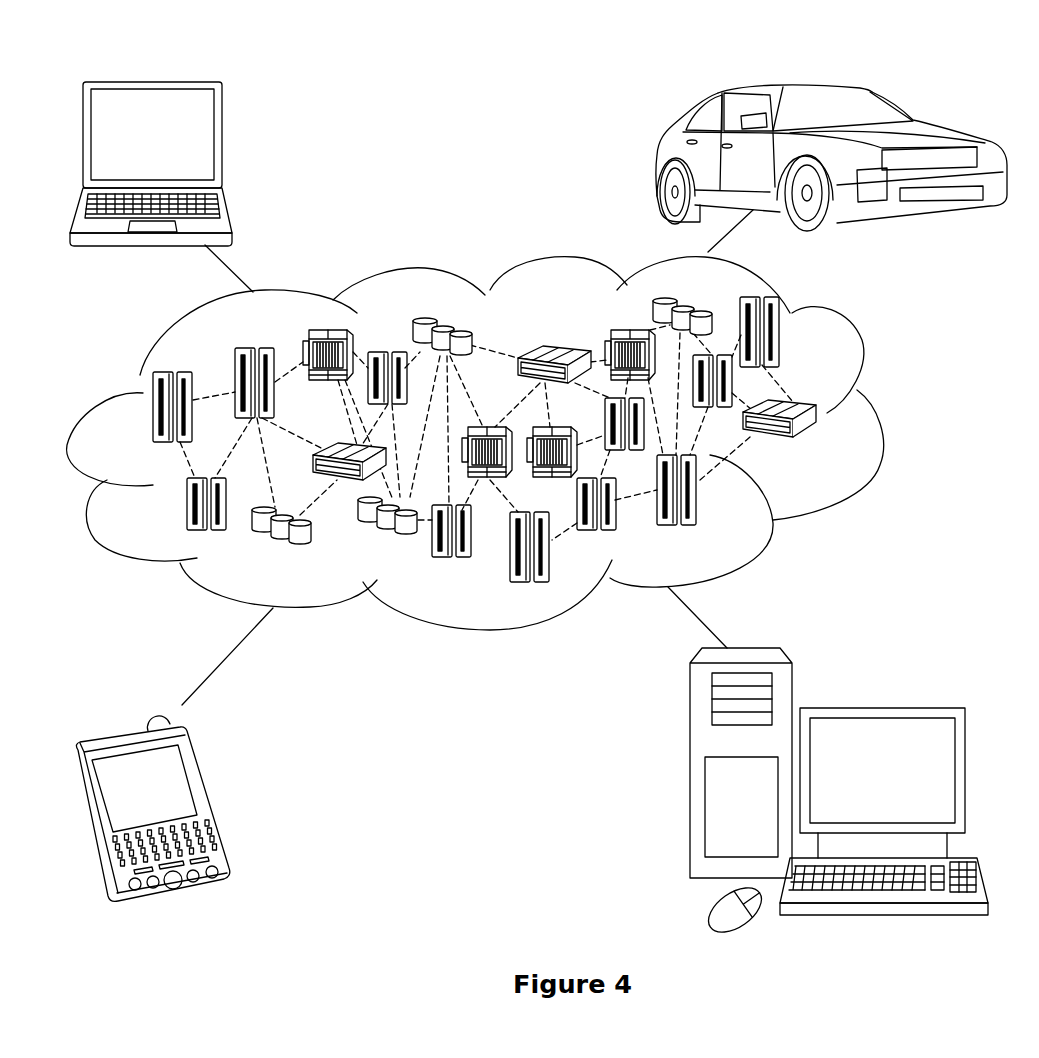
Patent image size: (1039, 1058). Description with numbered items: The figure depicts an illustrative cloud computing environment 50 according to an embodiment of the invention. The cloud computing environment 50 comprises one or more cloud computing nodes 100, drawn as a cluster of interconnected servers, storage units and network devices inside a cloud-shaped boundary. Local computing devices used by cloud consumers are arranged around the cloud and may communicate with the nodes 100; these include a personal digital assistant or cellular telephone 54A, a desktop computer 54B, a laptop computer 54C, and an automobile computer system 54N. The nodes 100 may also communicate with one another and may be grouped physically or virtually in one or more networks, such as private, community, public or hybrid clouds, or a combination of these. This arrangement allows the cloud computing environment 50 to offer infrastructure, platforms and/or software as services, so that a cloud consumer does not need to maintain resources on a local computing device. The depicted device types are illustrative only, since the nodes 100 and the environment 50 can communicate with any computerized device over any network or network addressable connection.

The cloud computing environment 50 is at (880, 418).
The cloud computing nodes 100 is at (822, 447).
The personal digital assistant or cellular telephone 54A is at (212, 800).
The desktop computer 54B is at (880, 707).
The laptop computer 54C is at (222, 142).
The automobile computer system 54N is at (660, 163).